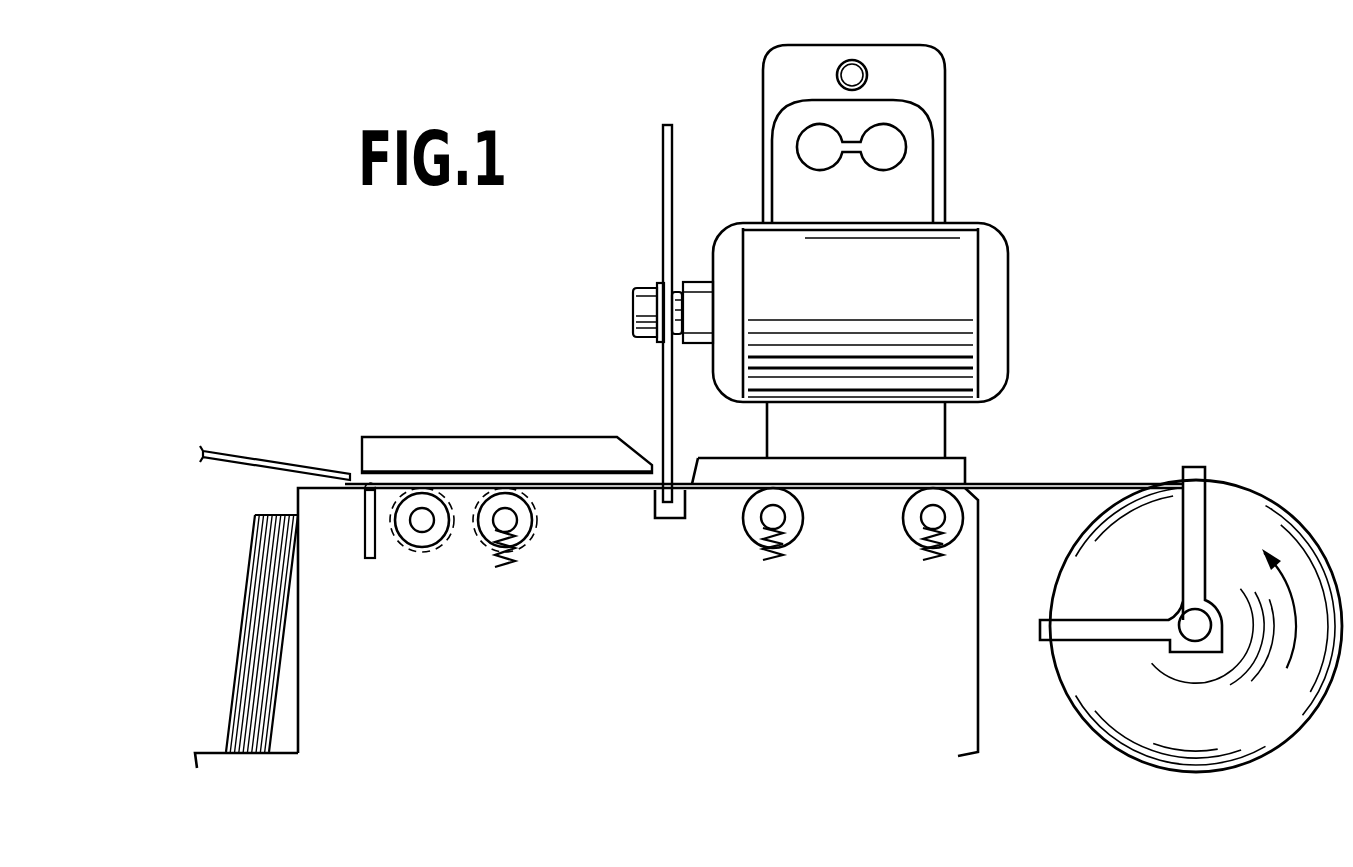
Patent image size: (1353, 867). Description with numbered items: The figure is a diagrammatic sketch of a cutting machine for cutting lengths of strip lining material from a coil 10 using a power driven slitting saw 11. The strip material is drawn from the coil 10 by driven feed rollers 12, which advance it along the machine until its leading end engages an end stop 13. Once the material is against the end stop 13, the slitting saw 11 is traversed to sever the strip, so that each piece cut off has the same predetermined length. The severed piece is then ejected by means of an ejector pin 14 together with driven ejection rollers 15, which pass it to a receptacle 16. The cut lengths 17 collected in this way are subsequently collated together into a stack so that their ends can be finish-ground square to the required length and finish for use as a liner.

The coil 10 is at (1157, 520).
The power driven slitting saw 11 is at (636, 391).
The driven feed rollers 12 is at (905, 525).
The end stop 13 is at (336, 472).
The ejector pin 14 is at (372, 556).
The driven ejection rollers 15 is at (484, 530).
The receptacle 16 is at (304, 663).
The cut lengths 17 is at (262, 458).